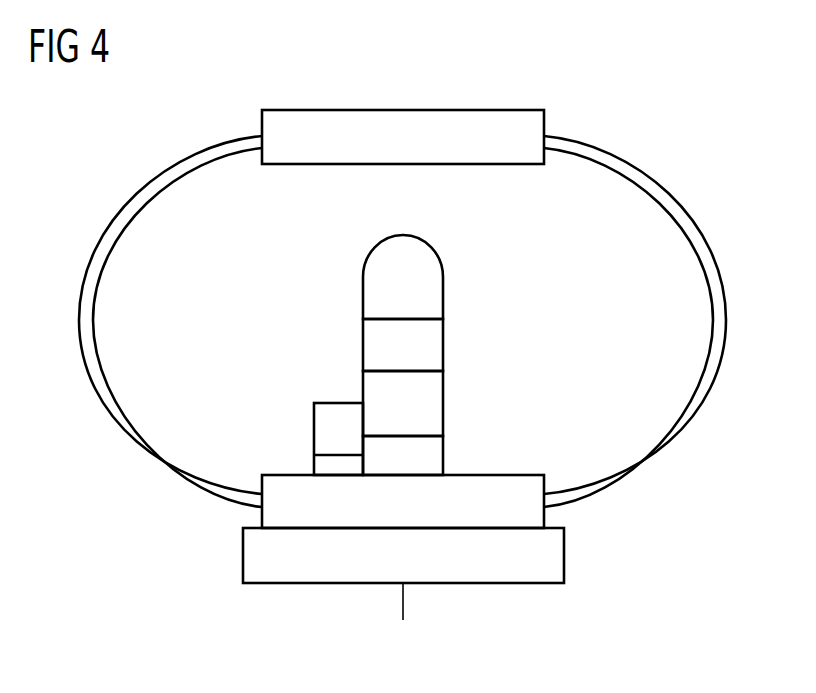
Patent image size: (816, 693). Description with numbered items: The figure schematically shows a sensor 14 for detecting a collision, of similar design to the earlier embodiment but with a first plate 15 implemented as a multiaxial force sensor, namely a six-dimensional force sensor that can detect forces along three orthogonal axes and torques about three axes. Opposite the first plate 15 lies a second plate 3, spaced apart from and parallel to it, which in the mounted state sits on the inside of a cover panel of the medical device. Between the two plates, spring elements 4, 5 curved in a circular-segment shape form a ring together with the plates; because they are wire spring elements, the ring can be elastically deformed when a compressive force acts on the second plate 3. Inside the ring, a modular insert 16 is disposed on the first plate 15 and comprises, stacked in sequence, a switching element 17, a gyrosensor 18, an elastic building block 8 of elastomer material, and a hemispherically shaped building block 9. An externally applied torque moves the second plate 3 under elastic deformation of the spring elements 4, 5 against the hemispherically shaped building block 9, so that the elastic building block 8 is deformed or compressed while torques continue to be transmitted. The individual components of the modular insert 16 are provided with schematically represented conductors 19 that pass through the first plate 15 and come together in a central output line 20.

The second plate 3 is at (404, 110).
The spring element 4 is at (83, 322).
The spring element 5 is at (720, 322).
The elastic building block 8 is at (418, 343).
The hemispherically shaped building block 9 is at (418, 297).
The sensor 14 is at (403, 339).
The first plate 15 is at (510, 583).
The modular insert 16 is at (535, 272).
The switching element 17 is at (418, 455).
The gyrosensor 18 is at (418, 410).
The conductors 19 is at (314, 426).
The central output line 20 is at (402, 605).